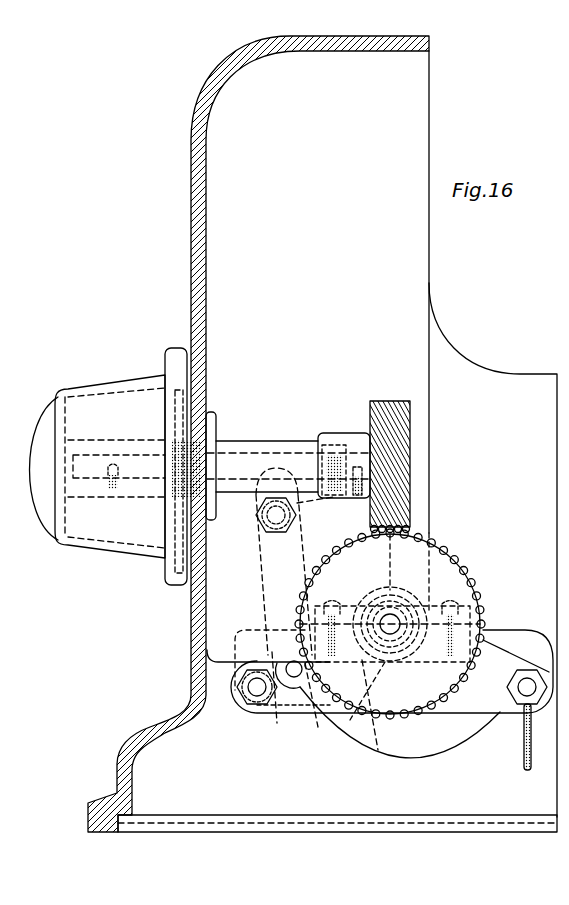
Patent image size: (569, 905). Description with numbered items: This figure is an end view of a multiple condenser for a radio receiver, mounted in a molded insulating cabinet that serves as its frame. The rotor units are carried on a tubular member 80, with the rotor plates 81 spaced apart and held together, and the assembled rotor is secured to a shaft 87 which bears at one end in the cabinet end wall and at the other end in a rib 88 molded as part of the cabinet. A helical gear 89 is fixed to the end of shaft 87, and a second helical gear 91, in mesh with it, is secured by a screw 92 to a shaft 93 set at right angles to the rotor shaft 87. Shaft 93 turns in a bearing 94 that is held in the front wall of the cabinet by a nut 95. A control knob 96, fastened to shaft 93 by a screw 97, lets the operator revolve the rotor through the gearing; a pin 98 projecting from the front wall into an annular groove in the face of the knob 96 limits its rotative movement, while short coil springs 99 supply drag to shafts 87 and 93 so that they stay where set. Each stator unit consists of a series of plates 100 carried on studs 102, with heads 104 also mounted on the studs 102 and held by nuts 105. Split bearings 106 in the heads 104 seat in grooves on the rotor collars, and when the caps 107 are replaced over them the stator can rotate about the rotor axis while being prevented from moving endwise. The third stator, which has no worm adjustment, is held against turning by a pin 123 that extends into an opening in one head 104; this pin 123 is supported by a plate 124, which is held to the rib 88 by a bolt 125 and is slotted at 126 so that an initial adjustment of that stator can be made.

The tubular member 80 is at (412, 611).
The rotor plates 81 is at (259, 608).
The shaft 87 is at (406, 608).
The rib 88 is at (432, 508).
The helical gear 89 is at (484, 599).
The helical gear 91 is at (412, 440).
The screw 92 is at (358, 465).
The shaft 93 is at (280, 452).
The bearing 94 is at (256, 440).
The nut 95 is at (183, 432).
The control knob 96 is at (43, 423).
The screw 97 is at (111, 490).
The pin 98 is at (183, 572).
The coil springs 99 is at (327, 447).
The plates 100 is at (450, 740).
The studs 102 is at (257, 690).
The heads 104 is at (245, 707).
The nuts 105 is at (266, 708).
The split bearings 106 is at (370, 610).
The caps 107 is at (468, 616).
The pin 123 is at (297, 677).
The plate 124 is at (305, 683).
The bolt 125 is at (286, 516).
The slot 126 is at (273, 539).